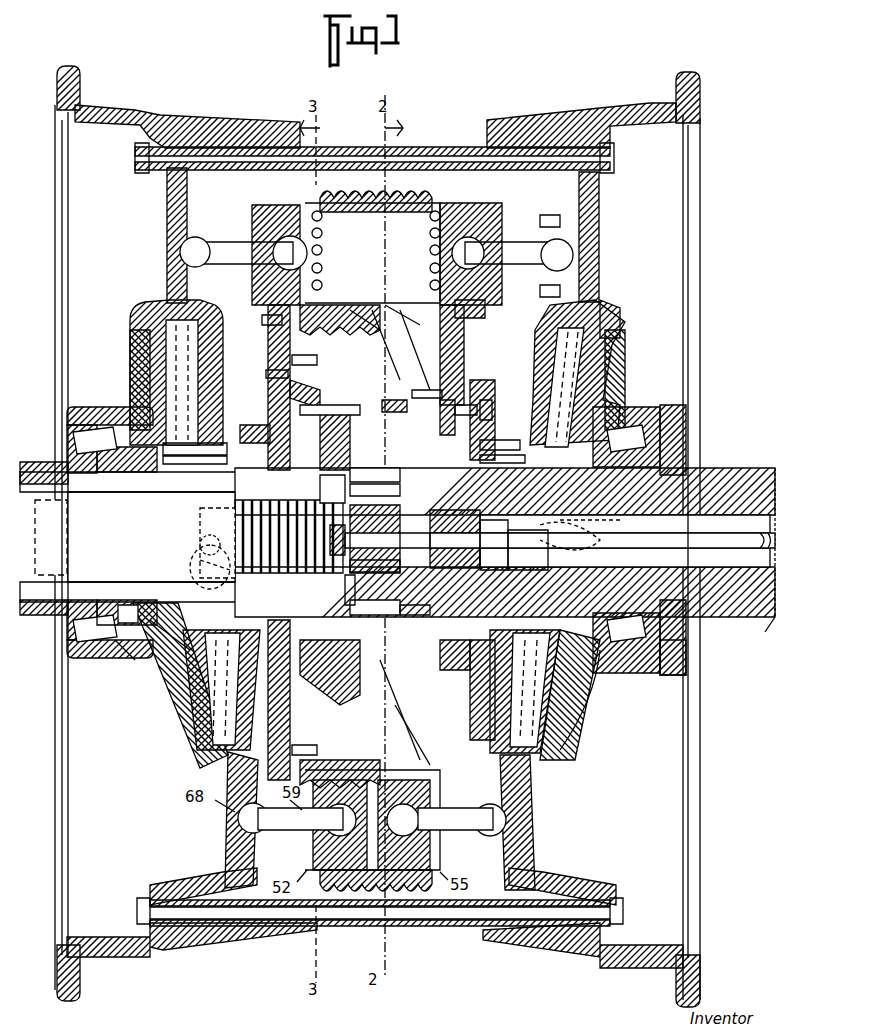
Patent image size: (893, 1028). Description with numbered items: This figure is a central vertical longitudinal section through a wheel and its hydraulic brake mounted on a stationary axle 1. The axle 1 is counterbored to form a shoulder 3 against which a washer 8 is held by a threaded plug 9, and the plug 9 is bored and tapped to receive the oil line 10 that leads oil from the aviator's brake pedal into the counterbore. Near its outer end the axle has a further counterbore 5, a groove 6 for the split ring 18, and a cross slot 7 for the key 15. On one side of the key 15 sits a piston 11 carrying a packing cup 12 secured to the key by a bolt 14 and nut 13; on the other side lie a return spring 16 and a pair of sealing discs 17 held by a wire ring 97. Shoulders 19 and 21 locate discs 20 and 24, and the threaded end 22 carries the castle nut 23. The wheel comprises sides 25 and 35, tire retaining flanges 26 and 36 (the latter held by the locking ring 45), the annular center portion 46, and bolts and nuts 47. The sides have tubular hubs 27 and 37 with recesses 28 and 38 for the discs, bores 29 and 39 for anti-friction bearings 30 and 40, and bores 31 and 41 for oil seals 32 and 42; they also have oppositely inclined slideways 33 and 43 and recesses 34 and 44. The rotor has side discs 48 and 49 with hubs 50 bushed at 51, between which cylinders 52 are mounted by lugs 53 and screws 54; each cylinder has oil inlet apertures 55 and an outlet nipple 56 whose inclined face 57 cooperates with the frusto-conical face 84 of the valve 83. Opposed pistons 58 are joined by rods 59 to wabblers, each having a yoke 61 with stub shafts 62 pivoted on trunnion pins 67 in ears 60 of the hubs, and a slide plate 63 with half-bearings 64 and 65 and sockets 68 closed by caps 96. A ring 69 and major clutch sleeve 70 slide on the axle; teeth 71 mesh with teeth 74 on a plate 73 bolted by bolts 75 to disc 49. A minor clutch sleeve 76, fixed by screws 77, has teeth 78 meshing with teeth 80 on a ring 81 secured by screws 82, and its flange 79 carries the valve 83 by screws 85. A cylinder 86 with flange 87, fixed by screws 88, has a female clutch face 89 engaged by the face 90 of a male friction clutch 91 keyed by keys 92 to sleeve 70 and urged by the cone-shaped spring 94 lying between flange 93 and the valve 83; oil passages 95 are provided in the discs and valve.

The stationary shaft or axle 1 is at (762, 630).
The shoulder 3 is at (570, 545).
The counterbore 5 is at (98, 578).
The groove 6 is at (210, 505).
The cross slot 7 is at (352, 582).
The washer 8 is at (500, 575).
The threaded plug 9 is at (475, 520).
The oil line 10 is at (730, 536).
The piston 11 is at (395, 510).
The packing cup 12 is at (394, 585).
The nut 13 is at (365, 580).
The bolt 14 is at (365, 536).
The key 15 is at (335, 490).
The return spring 16 is at (342, 583).
The sealing discs 17 is at (195, 563).
The split ring (sealing ring) 18 is at (220, 548).
The shoulder 19 is at (718, 465).
The disc 20 is at (686, 435).
The shoulder 21 is at (80, 475).
The threaded outer end 22 is at (22, 462).
The castle nut 23 is at (35, 615).
The disc 24 is at (70, 640).
The wheel side (side plate) 25 is at (675, 162).
The tire retaining flange 26 is at (700, 100).
The tubular hub 27 is at (672, 675).
The recess 28 is at (686, 415).
The bore 29 is at (686, 650).
The anti-friction bearing 30 is at (645, 673).
The bore 31 is at (625, 450).
The oil seal 32 is at (618, 673).
The inclined slideway 33 is at (579, 200).
The recess 34 is at (620, 330).
The wheel side (side plate) 35 is at (76, 176).
The tire retaining flange 36 is at (80, 95).
The tubular hub 37 is at (103, 397).
The recess 38 is at (74, 425).
The bore 39 is at (75, 438).
The anti-friction bearing 40 is at (92, 640).
The bore 41 is at (125, 650).
The oil seal 42 is at (112, 671).
The inclined slideway 43 is at (187, 200).
The recess 44 is at (172, 688).
The locking ring 45 is at (57, 958).
The annular center portion 46 is at (440, 147).
The bolts and nuts 47 is at (470, 158).
The rotor side disc 48 is at (484, 312).
The rotor side disc 49 is at (262, 320).
The hub 50 is at (220, 427).
The bushing 51 is at (222, 447).
The cylinder 52 is at (443, 204).
The lug 53 is at (300, 735).
The screw 54 is at (304, 748).
The oil inlet aperture 55 is at (427, 250).
The fluid outlet nipple 56 is at (353, 310).
The inclined face 57 is at (340, 326).
The piston 58 is at (380, 257).
The rod 59 is at (510, 244).
The ear 60 is at (183, 620).
The yoke 61 is at (138, 612).
The stub shaft 62 is at (200, 748).
The slide plate 63 is at (580, 818).
The half-bearing 64 is at (530, 318).
The half-bearing 65 is at (120, 757).
The trunnion pin 67 is at (170, 545).
The connecting-rod bearing socket 68 is at (590, 248).
The ring 69 is at (377, 481).
The major clutch sleeve 70 is at (375, 613).
The clutch teeth 71 is at (335, 415).
The disc or plate 73 is at (300, 392).
The clutch teeth 74 is at (290, 700).
The bolt 75 is at (250, 425).
The minor clutch sleeve 76 is at (494, 410).
The screw 77 is at (407, 615).
The clutch teeth 78 is at (445, 670).
The flange 79 is at (467, 690).
The clutch teeth 80 is at (446, 405).
The ring 81 is at (463, 402).
The screw 82 is at (492, 390).
The valve 83 is at (417, 738).
The frusto-conical face 84 is at (395, 312).
The screw 85 is at (428, 390).
The cylinder 86 is at (330, 379).
The flange 87 is at (303, 351).
The screw 88 is at (266, 374).
The female friction clutch face 89 is at (373, 357).
The clutch face 90 is at (345, 695).
The male friction clutch 91 is at (394, 396).
The key 92 is at (377, 467).
The flange 93 is at (420, 370).
The cone-shaped spring 94 is at (400, 670).
The oil passage 95 is at (475, 360).
The cap 96 is at (552, 212).
The wire ring 97 is at (205, 525).